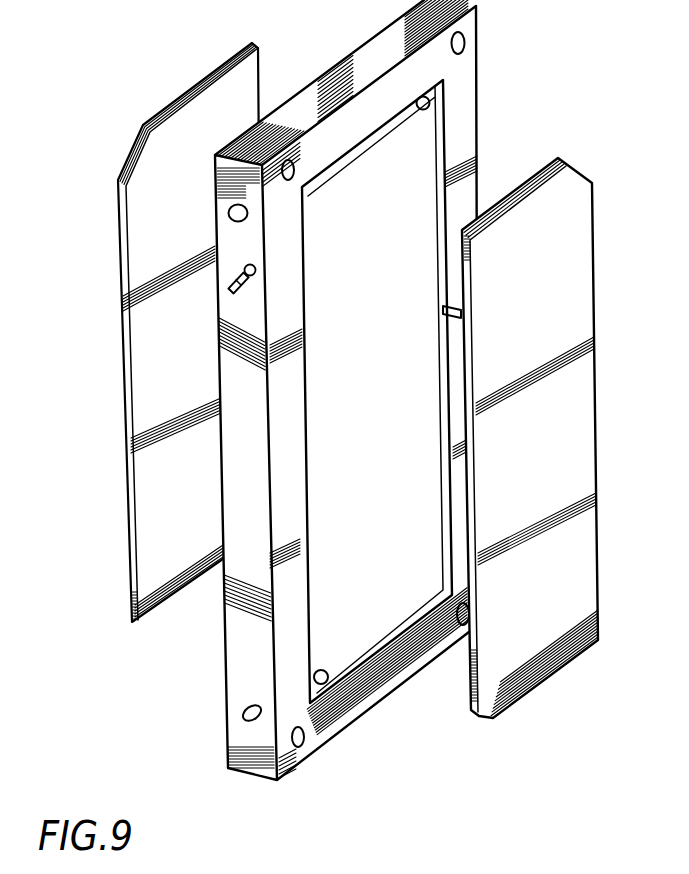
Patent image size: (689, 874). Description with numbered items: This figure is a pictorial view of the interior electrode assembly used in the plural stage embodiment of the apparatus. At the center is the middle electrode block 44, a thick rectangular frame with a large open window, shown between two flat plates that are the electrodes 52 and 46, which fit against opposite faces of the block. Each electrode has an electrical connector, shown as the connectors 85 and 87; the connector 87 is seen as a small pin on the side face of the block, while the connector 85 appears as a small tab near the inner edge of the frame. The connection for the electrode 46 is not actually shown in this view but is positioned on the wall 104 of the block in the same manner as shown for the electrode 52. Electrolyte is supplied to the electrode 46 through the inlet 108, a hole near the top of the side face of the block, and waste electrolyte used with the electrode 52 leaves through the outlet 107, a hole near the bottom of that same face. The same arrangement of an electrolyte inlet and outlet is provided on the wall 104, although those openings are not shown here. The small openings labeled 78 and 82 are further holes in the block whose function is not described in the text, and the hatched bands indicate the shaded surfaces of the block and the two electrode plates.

The middle electrode block 44 is at (357, 70).
The electrode 46 is at (150, 353).
The electrode 52 is at (557, 328).
The hole 78 is at (327, 671).
The inner lip 82 is at (430, 99).
The electrical connector 85 is at (442, 309).
The electrical connector 87 is at (223, 283).
The wall 104 is at (463, 142).
The outlet 107 is at (249, 718).
The inlet 108 is at (228, 214).